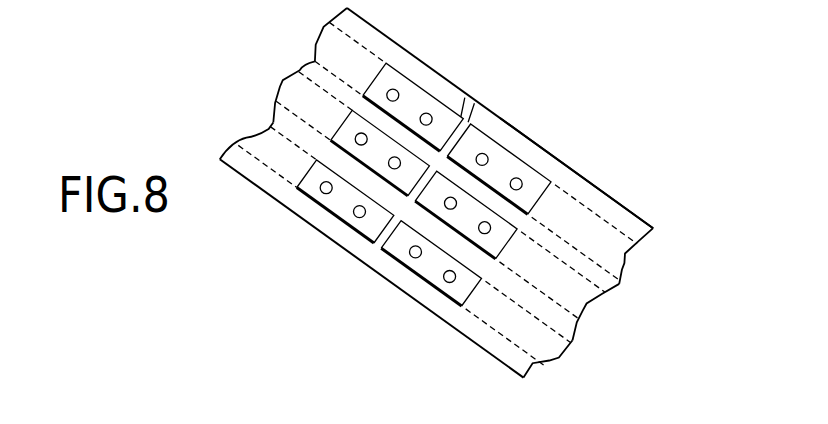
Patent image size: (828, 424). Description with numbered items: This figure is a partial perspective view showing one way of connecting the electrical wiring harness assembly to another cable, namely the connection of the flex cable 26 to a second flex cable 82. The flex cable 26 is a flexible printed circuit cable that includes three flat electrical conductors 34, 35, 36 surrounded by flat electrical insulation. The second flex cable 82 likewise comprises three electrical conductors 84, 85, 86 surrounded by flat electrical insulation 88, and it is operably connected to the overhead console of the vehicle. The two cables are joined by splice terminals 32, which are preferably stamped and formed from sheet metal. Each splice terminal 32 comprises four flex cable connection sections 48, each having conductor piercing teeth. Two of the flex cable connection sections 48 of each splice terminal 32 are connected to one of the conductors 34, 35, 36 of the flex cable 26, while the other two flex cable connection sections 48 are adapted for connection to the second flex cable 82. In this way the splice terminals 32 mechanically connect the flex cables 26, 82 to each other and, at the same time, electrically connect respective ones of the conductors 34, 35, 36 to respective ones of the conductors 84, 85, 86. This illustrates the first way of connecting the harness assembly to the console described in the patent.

The flex cable 26 is at (373, 27).
The splice terminals 32 is at (463, 105).
The flat electrical conductor 34 is at (327, 24).
The flat electrical conductor 35 is at (298, 66).
The flat electrical conductor 36 is at (243, 137).
The flex cable connection sections 48 is at (359, 218).
The second flex cable 82 is at (610, 197).
The electrical conductor 84 is at (626, 268).
The electrical conductor 85 is at (589, 311).
The electrical conductor 86 is at (553, 365).
The flat electrical insulation 88 is at (490, 356).